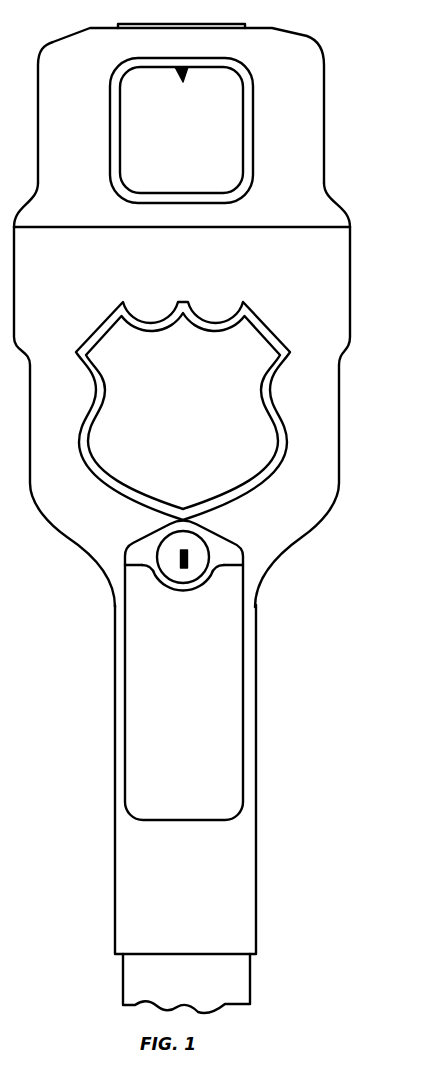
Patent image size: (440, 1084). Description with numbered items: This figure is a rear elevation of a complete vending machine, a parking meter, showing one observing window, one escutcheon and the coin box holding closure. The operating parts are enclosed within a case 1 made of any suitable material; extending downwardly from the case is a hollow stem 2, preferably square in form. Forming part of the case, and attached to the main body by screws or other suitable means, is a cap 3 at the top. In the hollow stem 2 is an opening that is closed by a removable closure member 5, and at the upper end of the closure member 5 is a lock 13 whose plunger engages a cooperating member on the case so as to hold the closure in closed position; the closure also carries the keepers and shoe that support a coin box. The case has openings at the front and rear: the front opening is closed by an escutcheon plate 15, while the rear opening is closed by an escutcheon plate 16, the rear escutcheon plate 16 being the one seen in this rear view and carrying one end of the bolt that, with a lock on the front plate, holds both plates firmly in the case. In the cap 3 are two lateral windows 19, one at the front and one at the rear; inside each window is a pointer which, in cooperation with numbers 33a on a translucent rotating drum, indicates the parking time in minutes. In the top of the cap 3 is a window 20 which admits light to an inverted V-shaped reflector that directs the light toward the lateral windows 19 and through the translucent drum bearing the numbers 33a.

The case 1 is at (333, 413).
The hollow stem 2 is at (247, 840).
The cap 3 is at (313, 132).
The closure member 5 is at (184, 692).
The lock 13 is at (200, 553).
The escutcheon plate 15 is at (227, 138).
The escutcheon plate 16 is at (177, 360).
The lateral window 19 is at (195, 78).
The window 20 is at (213, 23).
The numbers 33a is at (177, 133).